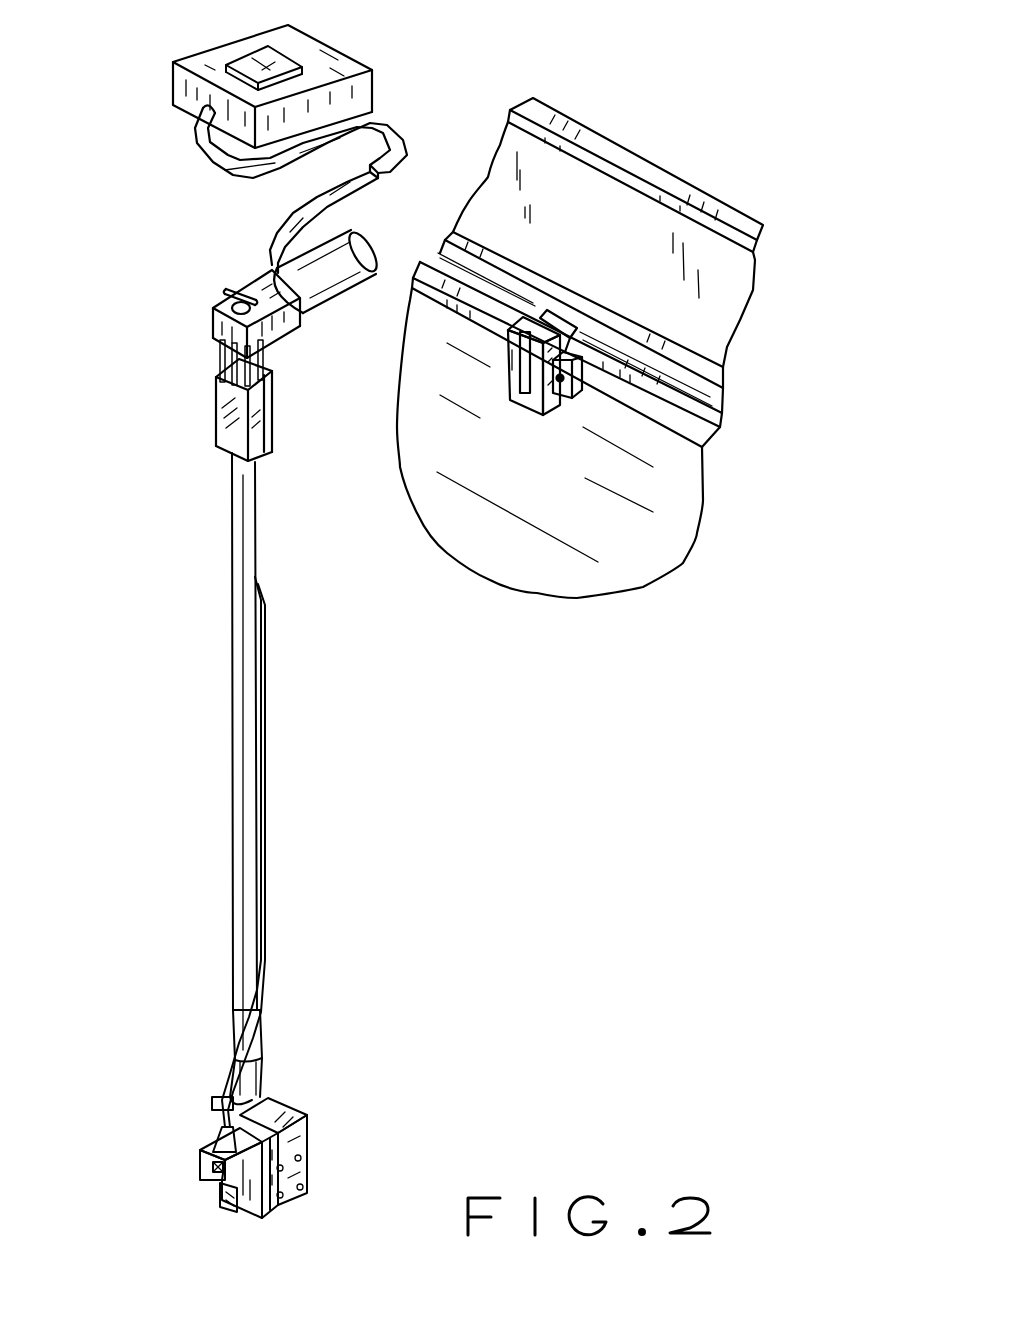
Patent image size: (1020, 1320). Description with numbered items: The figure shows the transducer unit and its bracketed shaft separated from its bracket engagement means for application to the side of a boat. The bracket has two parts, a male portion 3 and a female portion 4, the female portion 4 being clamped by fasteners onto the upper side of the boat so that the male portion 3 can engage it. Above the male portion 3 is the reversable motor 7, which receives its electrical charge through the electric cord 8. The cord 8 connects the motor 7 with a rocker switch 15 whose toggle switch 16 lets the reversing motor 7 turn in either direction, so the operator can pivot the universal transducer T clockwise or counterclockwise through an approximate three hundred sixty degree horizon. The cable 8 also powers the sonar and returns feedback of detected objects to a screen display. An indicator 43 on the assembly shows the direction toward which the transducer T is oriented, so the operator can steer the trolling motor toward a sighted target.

The rocker switch 15 is at (323, 48).
The switch 16 is at (267, 73).
The electric cord 8 is at (391, 124).
The reversable motor 7 is at (330, 273).
The indicator 43 is at (228, 290).
The male portion 3 is at (218, 420).
The female portion 4 is at (557, 415).
The universal transducer T is at (223, 1198).